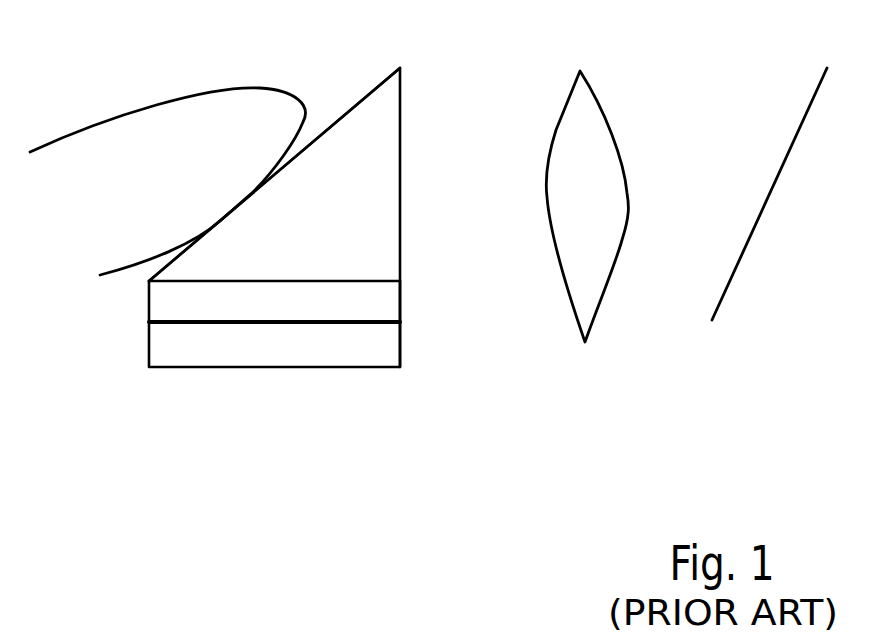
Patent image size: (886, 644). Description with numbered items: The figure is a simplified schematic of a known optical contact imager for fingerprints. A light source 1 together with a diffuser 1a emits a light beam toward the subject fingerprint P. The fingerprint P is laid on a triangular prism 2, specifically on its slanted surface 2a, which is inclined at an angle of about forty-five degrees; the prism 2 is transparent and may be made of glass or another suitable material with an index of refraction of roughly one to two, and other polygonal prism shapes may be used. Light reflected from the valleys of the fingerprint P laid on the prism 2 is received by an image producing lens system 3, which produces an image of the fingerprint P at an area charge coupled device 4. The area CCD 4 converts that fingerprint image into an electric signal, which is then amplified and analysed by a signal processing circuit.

The subject fingerprint P is at (121, 120).
The light source 1 is at (278, 348).
The diffuser 1a is at (401, 302).
The triangular prism 2 is at (387, 98).
The slanted surface 2a is at (332, 127).
The image producing lens system 3 is at (608, 252).
The area charge coupled device 4 is at (782, 172).